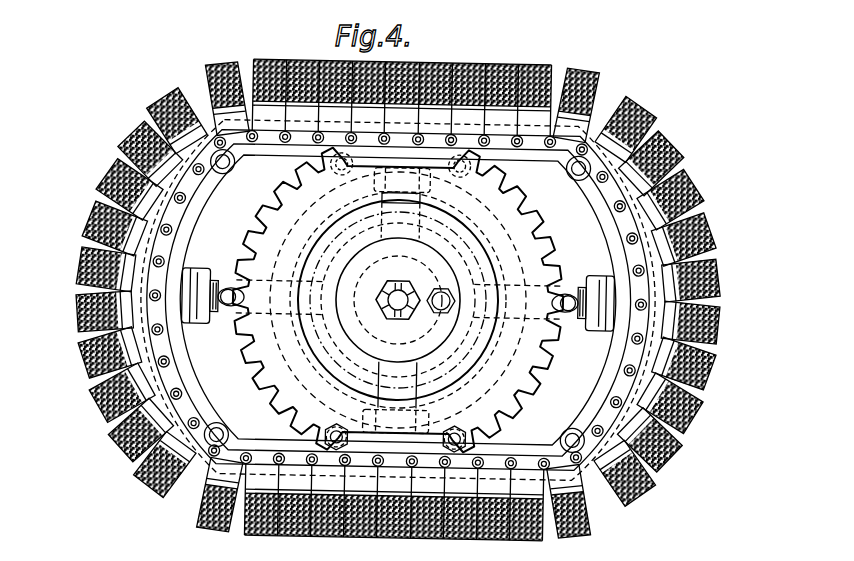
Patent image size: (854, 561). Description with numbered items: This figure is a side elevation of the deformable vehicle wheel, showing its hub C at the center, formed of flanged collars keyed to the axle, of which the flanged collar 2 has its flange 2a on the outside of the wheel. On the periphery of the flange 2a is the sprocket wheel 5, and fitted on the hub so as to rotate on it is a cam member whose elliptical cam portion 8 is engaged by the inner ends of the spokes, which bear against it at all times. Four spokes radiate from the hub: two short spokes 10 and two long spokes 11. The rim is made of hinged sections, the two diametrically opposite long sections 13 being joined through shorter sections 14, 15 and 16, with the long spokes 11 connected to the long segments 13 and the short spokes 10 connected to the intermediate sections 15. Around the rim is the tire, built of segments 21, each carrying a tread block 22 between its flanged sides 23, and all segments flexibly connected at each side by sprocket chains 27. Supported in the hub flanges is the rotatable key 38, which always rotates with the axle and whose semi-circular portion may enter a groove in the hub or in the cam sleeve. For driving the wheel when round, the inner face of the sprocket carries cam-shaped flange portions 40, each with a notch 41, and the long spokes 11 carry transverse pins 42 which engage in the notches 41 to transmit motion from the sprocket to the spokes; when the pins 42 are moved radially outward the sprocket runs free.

The flanged collar 2 is at (422, 330).
The flange 2a is at (452, 377).
The sprocket wheel 5 is at (252, 221).
The elliptical cam portion 8 is at (465, 325).
The short spoke 10 is at (364, 396).
The long spoke 11 is at (223, 324).
The long rim section 13 is at (186, 392).
The rim section 14 is at (260, 155).
The rim section 15 is at (446, 430).
The rim section 16 is at (250, 450).
The tire segment 21 is at (660, 243).
The tread block 22 is at (649, 209).
The flanged side 23 is at (595, 136).
The sprocket chain 27 is at (164, 231).
The rotatable key 38 is at (446, 288).
The cam-shaped flange portion 40 is at (265, 253).
The notch 41 is at (257, 249).
The transverse pin 42 is at (227, 295).
The hub C is at (382, 291).